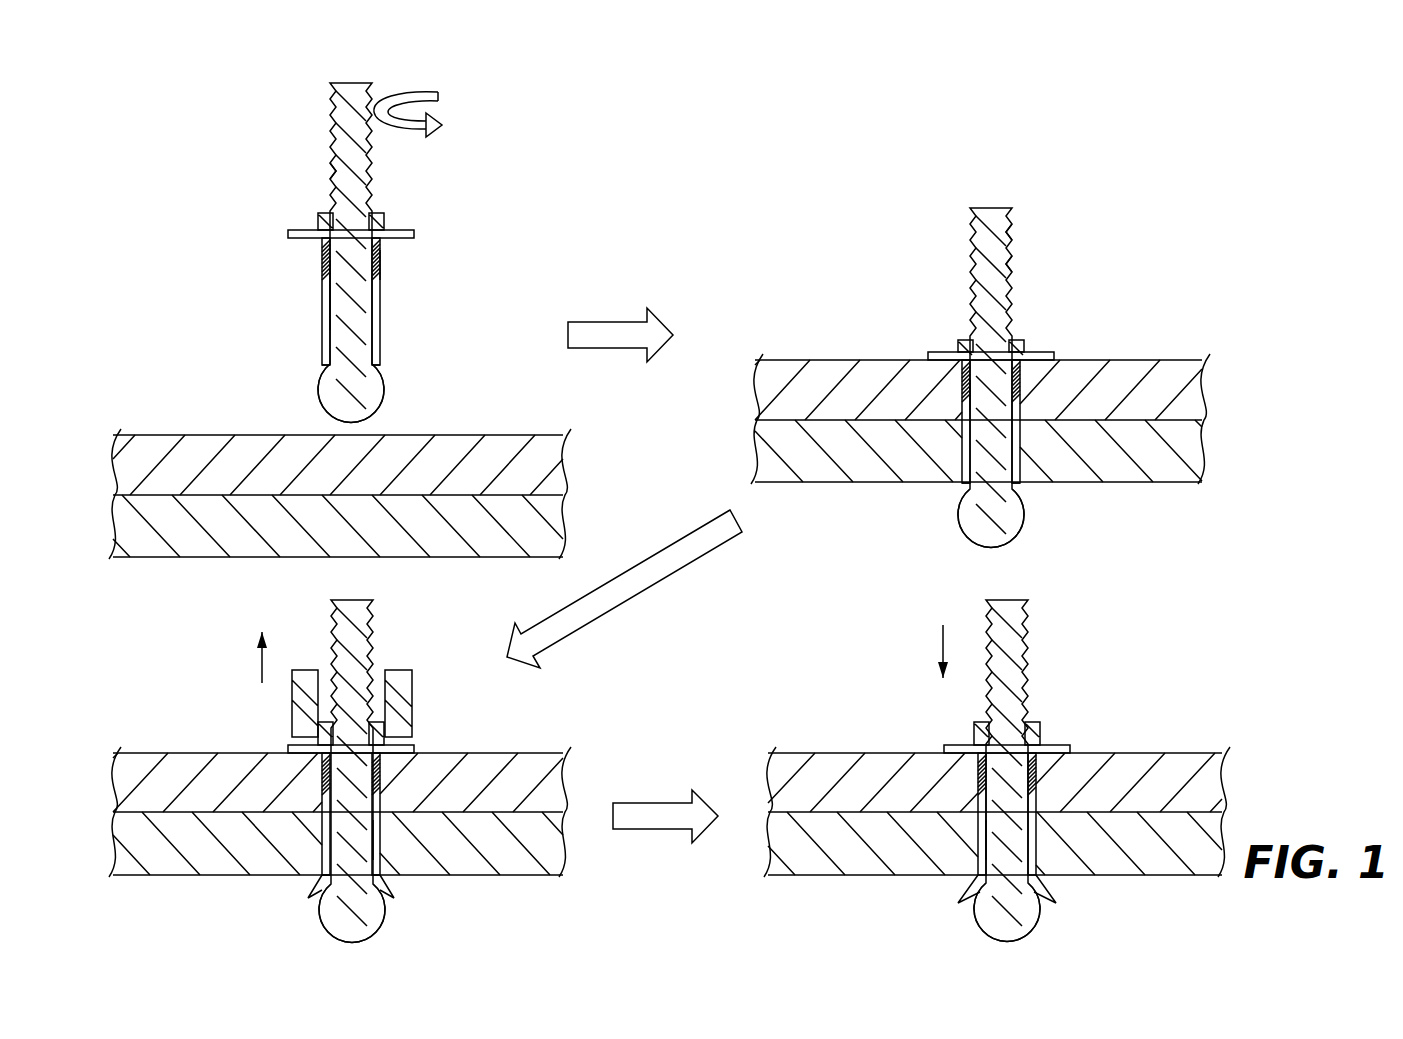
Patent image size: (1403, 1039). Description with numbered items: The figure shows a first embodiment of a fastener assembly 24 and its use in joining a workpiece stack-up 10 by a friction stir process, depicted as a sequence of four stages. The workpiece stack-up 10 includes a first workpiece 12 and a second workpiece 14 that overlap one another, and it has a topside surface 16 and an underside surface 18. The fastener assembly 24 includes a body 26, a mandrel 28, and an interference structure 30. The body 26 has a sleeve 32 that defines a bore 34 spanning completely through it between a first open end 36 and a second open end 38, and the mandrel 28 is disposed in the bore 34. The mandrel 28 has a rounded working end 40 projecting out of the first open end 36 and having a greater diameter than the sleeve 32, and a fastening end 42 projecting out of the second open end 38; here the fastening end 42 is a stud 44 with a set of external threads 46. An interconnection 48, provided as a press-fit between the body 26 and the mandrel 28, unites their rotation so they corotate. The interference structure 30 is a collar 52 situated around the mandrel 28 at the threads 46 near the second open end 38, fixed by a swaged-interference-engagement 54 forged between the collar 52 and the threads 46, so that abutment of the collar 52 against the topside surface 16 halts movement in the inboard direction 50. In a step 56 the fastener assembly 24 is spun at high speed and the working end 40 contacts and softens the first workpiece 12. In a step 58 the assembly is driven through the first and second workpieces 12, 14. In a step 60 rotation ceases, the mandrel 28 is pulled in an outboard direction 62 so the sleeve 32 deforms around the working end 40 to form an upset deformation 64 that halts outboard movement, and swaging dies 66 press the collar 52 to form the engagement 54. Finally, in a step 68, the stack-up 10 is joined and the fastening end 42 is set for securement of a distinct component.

The workpiece stack-up 10 is at (126, 430).
The first workpiece 12 is at (196, 452).
The second workpiece 14 is at (175, 525).
The topside surface 16 is at (510, 433).
The underside surface 18 is at (470, 557).
The fastener assembly 24 is at (322, 76).
The body 26 is at (380, 288).
The mandrel 28 is at (352, 315).
The interference structure 30 is at (385, 218).
The sleeve 32 is at (330, 310).
The bore 34 is at (340, 270).
The first open end 36 is at (322, 358).
The second open end 38 is at (378, 243).
The working end 40 is at (360, 400).
The fastening end 42 is at (345, 137).
The stud 44 is at (337, 172).
The set of external threads 46 is at (372, 148).
The interconnection 48 is at (378, 262).
The inboard direction 50 is at (940, 650).
The collar 52 is at (318, 226).
The swaged-interference-engagement 54 is at (985, 740).
The step 56 is at (518, 212).
The step 58 is at (1185, 220).
The step 60 is at (138, 695).
The outboard direction 62 is at (258, 656).
The upset deformation 64 is at (385, 890).
The swaging dies 66 is at (402, 688).
The step 68 is at (850, 652).